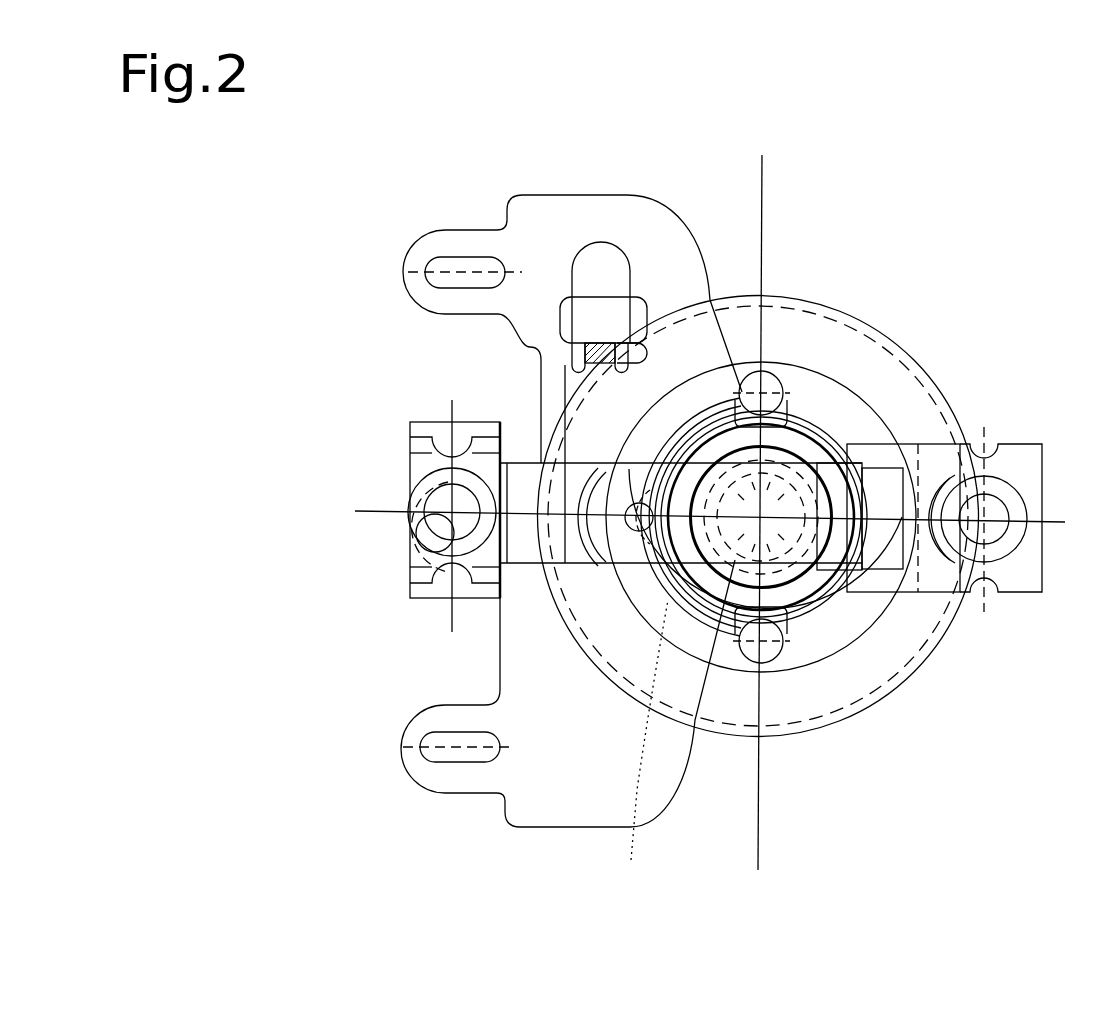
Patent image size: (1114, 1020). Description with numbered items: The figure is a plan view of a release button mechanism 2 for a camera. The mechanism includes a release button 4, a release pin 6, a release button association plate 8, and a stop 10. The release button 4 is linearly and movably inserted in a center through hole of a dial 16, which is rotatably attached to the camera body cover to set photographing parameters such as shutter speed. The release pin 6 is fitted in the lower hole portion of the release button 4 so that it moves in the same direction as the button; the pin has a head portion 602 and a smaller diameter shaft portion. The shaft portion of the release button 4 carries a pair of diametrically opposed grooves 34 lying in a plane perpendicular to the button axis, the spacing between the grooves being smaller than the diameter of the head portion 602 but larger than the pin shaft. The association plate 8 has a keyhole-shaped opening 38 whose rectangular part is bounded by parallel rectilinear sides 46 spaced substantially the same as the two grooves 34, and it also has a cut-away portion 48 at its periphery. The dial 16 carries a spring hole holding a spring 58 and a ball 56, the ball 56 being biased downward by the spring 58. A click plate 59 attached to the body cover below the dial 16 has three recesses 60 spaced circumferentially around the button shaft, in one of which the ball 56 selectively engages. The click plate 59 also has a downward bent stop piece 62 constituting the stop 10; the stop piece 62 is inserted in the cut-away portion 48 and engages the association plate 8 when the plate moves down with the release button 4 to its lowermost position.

The release button mechanism 2 is at (437, 134).
The release button 4 is at (782, 456).
The release pin 6 is at (960, 422).
The release button association plate 8 is at (716, 303).
The stop 10 is at (582, 351).
The dial 16 is at (920, 413).
The grooves 34 is at (823, 413).
The opening 38 is at (690, 737).
The parallel rectilinear sides 46 is at (838, 592).
The cut-away portion 48 is at (565, 347).
The ball 56 is at (573, 615).
The spring 58 is at (585, 588).
The click plate 59 is at (555, 810).
The recesses 60 is at (713, 345).
The stop piece 62 is at (573, 363).
The head portion 602 is at (840, 610).